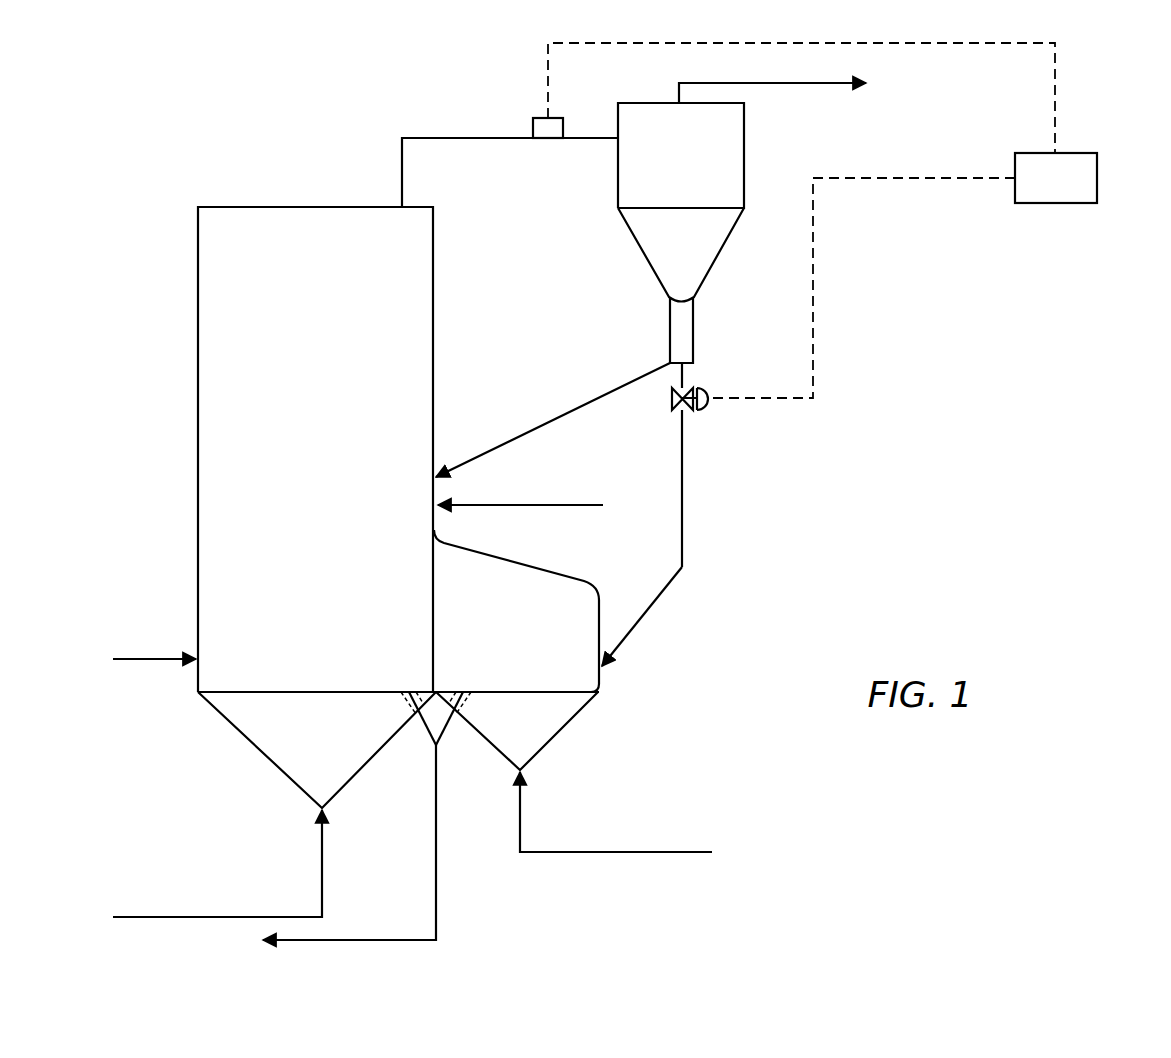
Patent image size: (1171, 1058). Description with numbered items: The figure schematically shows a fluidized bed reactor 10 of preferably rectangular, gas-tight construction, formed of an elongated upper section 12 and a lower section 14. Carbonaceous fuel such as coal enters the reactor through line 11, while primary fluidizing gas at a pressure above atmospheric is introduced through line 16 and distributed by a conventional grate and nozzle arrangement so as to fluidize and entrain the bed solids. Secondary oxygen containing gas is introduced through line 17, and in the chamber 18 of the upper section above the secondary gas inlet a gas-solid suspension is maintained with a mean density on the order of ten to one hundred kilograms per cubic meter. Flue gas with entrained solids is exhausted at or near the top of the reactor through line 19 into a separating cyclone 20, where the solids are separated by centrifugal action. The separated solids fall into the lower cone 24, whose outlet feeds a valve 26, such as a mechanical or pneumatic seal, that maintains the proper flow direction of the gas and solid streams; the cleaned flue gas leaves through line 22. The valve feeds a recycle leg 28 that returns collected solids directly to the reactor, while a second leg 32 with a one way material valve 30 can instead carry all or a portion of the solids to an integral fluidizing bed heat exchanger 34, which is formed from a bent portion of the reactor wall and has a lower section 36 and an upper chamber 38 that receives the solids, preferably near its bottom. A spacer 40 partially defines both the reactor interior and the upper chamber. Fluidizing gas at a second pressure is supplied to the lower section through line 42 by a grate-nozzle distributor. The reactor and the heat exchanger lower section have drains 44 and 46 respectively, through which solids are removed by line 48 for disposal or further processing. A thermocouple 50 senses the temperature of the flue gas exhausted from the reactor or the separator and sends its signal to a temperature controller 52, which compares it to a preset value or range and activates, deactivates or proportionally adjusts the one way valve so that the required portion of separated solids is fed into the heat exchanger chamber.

The fluidized bed reactor 10 is at (177, 275).
The line 11 is at (148, 664).
The elongated section 12 is at (197, 362).
The lower section 14 is at (250, 746).
The line 16 is at (167, 925).
The line 17 is at (525, 507).
The chamber 18 is at (322, 373).
The line 19 is at (437, 140).
The separating cyclone 20 is at (744, 137).
The line 22 is at (752, 83).
The lower cone 24 is at (722, 247).
The valve 26 is at (693, 325).
The recycle leg 28 is at (568, 412).
The one way material valve 30 is at (686, 412).
The second leg 32 is at (684, 500).
The integral fluidizing bed heat exchanger 34 is at (600, 613).
The lower section 36 is at (565, 730).
The upper chamber 38 is at (495, 676).
The spacer 40 is at (436, 560).
The line 42 is at (655, 854).
The drain 44 is at (420, 722).
The drain 46 is at (443, 722).
The line 48 is at (437, 870).
The thermocouple 50 is at (533, 128).
The temperature controller 52 is at (1097, 178).